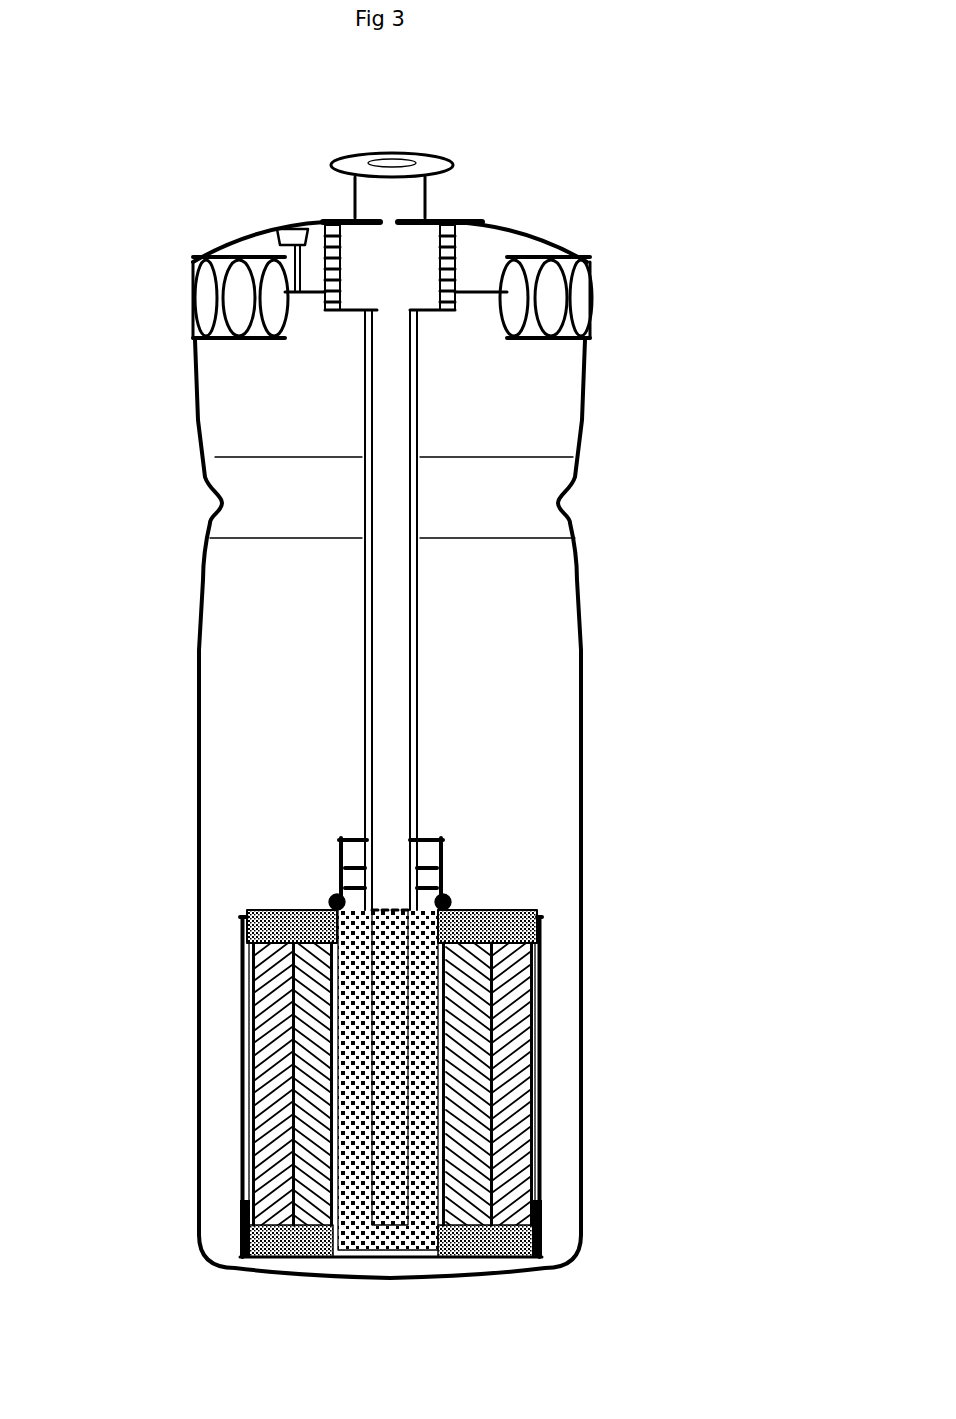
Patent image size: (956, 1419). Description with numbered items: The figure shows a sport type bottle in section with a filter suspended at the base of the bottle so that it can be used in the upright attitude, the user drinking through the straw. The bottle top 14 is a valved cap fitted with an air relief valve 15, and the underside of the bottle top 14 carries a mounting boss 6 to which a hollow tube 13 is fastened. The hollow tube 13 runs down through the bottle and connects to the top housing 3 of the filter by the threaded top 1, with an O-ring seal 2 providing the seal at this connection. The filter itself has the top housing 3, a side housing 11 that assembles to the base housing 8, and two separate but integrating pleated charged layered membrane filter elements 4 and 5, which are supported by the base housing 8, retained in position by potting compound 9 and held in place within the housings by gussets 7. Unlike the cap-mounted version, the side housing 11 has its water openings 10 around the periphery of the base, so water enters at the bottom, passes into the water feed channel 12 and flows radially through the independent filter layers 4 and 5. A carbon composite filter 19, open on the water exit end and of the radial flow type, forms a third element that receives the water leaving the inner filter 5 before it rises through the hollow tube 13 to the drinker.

The threaded top 1 is at (360, 860).
The O-ring seal 2 is at (330, 894).
The top housing 3 is at (270, 905).
The pleated charged layered membrane filter element 4 is at (273, 1022).
The pleated charged layered membrane filter element 5 is at (445, 855).
The mounting boss 6 is at (325, 240).
The gusset 7 is at (287, 1255).
The base housing 8 is at (537, 1243).
The potting compound 9 is at (537, 1217).
The water openings 10 is at (533, 1188).
The side housing 11 is at (540, 1027).
The water feed channel 12 is at (533, 1057).
The hollow tube 13 is at (420, 757).
The bottle top 14 is at (513, 230).
The air relief valve 15 is at (293, 235).
The carbon composite filter 19 is at (412, 1007).